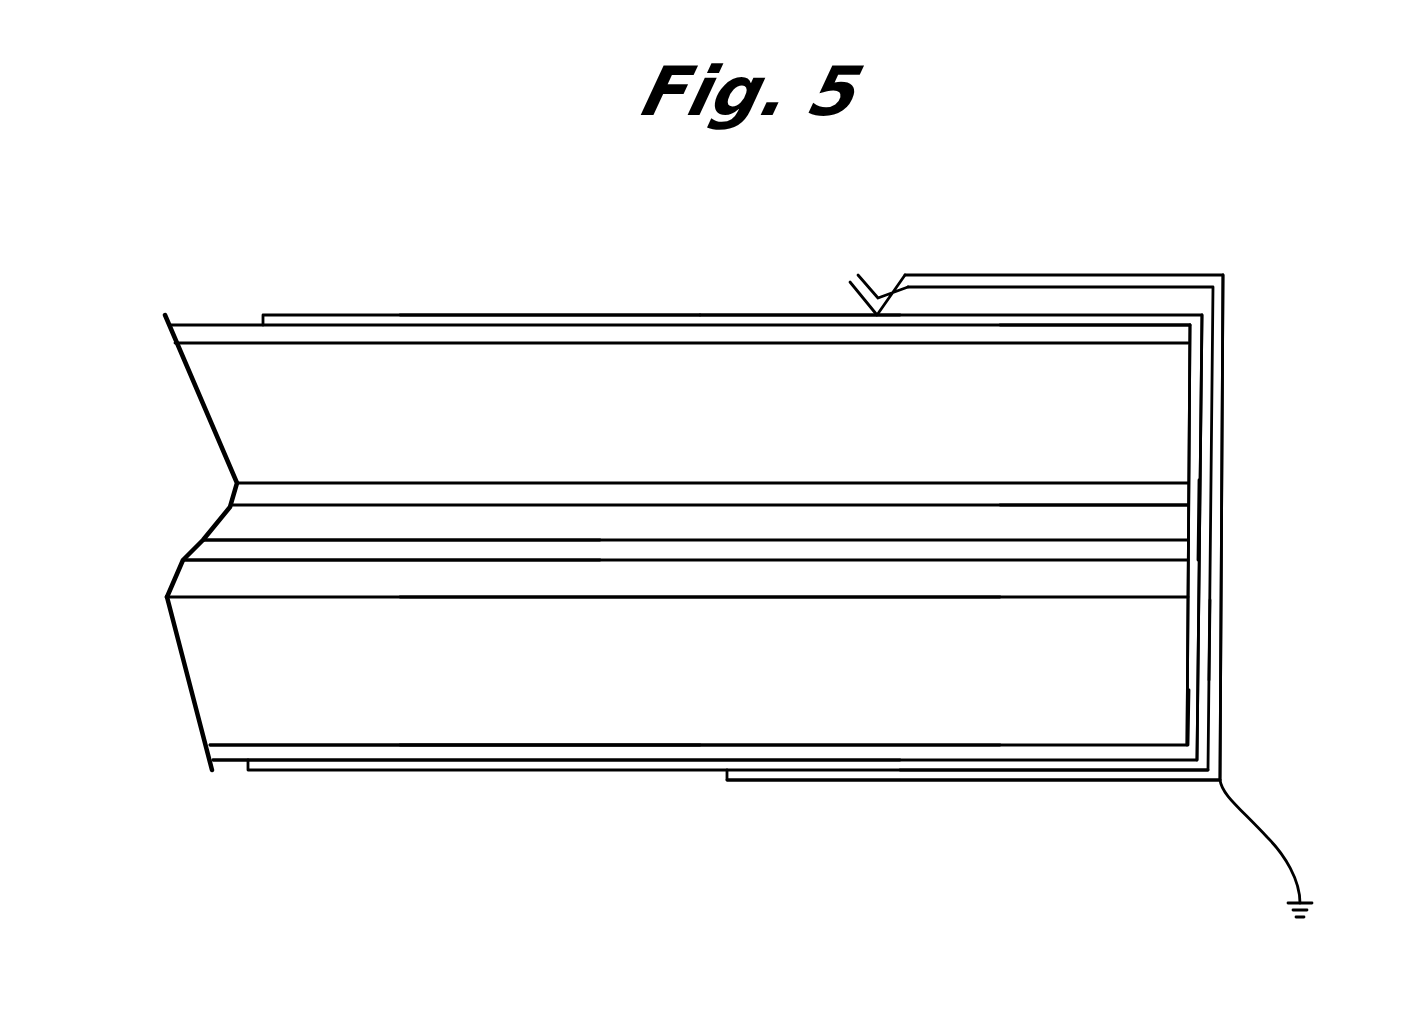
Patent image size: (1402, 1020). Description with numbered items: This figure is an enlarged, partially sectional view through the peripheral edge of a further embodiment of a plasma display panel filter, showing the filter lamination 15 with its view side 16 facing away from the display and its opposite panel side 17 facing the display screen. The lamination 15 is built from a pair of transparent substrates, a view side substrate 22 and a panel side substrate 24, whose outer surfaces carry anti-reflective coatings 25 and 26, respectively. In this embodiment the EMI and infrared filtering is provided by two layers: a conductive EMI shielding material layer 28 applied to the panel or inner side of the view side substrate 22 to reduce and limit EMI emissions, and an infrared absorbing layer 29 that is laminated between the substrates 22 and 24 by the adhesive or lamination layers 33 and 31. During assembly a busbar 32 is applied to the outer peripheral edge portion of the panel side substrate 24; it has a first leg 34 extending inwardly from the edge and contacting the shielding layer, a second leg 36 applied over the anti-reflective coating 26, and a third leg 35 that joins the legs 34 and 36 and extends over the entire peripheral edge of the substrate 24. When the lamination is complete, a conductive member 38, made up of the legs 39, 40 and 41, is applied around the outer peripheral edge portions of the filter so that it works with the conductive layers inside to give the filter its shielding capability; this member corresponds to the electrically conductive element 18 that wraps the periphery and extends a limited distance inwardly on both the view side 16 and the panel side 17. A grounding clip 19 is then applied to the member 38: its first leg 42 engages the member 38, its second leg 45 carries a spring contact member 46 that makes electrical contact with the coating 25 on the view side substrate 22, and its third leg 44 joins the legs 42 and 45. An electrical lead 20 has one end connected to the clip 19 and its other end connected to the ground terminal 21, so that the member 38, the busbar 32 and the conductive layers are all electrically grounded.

The filter lamination 15 is at (1040, 645).
The view side 16 is at (218, 320).
The panel side 17 is at (227, 762).
The electrically conductive element 18 is at (612, 316).
The grounding clip 19 is at (1223, 460).
The electrical lead 20 is at (1270, 838).
The ground terminal 21 is at (1305, 903).
The view side substrate 22 is at (280, 375).
The panel side substrate 24 is at (498, 708).
The anti-reflective coating 25 is at (492, 333).
The anti-reflective coating 26 is at (657, 752).
The conductive EMI shielding material layer 28 is at (290, 488).
The infrared absorbing layer 29 is at (292, 548).
The adhesive or lamination layer 31 is at (185, 577).
The busbar 32 is at (1194, 417).
The adhesive or lamination layer 33 is at (235, 520).
The first leg of busbar 34 is at (1120, 507).
The third leg of busbar 35 is at (1188, 385).
The second leg of busbar 36 is at (1150, 325).
The conductive member 38 is at (1188, 718).
The leg of conductive member 39 is at (1103, 765).
The leg of conductive member 40 is at (1197, 522).
The leg of conductive member 41 is at (782, 315).
The first leg of grounding clip 42 is at (958, 780).
The third leg of grounding clip 44 is at (1222, 627).
The second leg of grounding clip 45 is at (962, 275).
The spring contact member 46 is at (880, 290).